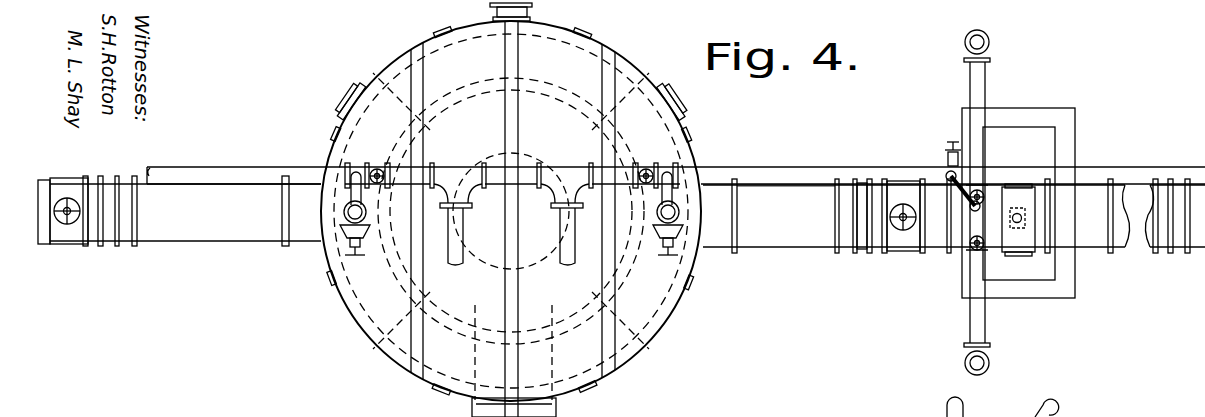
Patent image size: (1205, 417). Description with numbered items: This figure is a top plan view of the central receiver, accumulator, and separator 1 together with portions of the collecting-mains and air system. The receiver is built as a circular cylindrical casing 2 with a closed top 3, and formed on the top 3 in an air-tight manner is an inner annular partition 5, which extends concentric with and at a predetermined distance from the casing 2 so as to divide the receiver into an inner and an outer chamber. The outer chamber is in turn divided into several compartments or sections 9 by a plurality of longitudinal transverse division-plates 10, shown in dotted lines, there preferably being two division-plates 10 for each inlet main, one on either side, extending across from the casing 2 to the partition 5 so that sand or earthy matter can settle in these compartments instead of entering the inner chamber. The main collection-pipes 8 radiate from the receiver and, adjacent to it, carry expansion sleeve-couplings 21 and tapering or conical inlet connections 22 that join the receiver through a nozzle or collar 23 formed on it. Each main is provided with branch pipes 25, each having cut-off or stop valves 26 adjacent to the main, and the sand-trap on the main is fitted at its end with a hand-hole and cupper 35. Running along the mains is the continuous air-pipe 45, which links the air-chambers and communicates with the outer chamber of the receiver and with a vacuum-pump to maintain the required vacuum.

The central receiver 1 is at (511, 210).
The circular cylindrical casing 2 is at (677, 312).
The closed top 3 is at (511, 196).
The inner annular partition 5 is at (511, 211).
The main collection-pipes 8 is at (621, 222).
The compartments or sections 9 is at (508, 219).
The division-plates 10 is at (511, 211).
The expansion sleeve-couplings 21 is at (862, 228).
The tapering or conical inlet connections 22 is at (786, 206).
The nozzle or collar 23 is at (722, 216).
The branch pipes 25 is at (985, 83).
The cut-off or stop valves 26 is at (965, 255).
The hand-hole and cupper 35 is at (1020, 256).
The continuous air-pipe 45 is at (1190, 167).